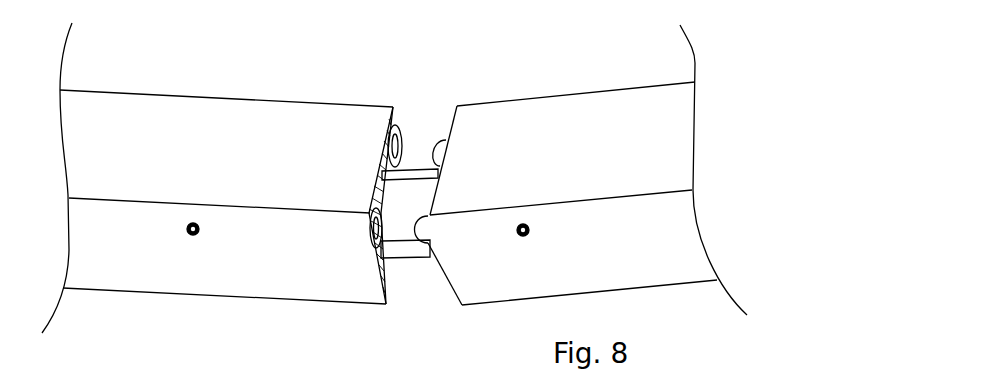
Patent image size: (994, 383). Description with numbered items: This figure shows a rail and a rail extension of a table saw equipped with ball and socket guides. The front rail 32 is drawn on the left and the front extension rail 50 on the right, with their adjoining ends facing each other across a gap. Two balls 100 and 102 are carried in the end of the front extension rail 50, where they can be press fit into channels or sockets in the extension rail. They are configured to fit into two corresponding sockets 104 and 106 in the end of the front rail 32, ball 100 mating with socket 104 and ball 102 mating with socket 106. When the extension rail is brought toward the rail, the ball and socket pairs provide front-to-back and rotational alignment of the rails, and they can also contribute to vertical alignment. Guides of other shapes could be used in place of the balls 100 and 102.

The front rail 32 is at (181, 150).
The front extension rail 50 is at (610, 123).
The ball 100 is at (421, 230).
The ball 102 is at (440, 150).
The socket 104 is at (377, 230).
The socket 106 is at (397, 143).